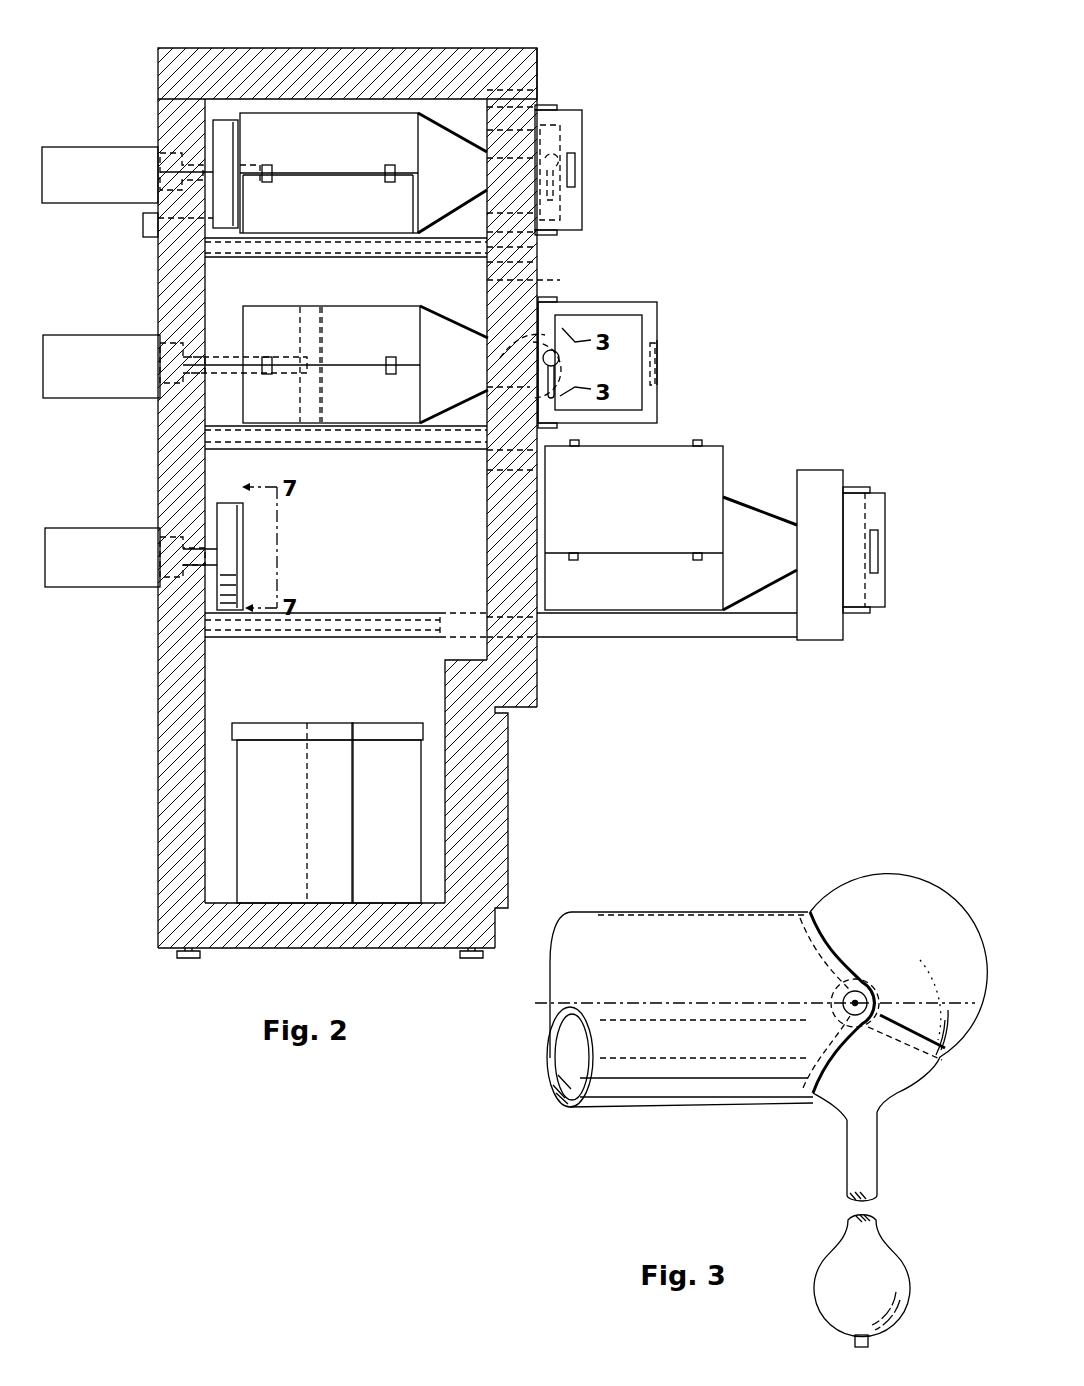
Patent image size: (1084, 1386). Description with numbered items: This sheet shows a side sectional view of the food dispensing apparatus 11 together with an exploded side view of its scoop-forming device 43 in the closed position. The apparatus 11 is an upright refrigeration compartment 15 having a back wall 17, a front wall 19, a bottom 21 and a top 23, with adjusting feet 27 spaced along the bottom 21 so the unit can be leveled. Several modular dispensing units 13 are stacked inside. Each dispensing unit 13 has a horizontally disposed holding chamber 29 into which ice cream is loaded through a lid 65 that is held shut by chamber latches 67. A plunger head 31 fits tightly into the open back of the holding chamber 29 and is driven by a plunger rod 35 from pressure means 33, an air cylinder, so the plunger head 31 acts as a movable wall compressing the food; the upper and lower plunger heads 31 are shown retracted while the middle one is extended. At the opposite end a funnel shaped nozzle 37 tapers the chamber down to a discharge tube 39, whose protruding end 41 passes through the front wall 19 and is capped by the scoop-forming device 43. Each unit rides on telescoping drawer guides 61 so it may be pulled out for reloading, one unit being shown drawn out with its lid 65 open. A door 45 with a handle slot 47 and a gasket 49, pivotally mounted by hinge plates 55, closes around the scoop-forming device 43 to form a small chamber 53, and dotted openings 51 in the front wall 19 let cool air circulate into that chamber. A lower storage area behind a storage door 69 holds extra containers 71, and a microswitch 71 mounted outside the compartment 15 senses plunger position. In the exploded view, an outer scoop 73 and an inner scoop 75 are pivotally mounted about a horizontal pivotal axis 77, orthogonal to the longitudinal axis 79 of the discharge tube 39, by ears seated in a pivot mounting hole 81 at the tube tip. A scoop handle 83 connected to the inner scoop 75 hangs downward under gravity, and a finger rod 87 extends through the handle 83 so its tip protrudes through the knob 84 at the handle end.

In FIG. 2, the food dispensing apparatus 11 is at (522, 0).
In FIG. 2, the dispensing unit 13 is at (518, 383).
In FIG. 2, the refrigeration compartment 15 is at (215, 268).
In FIG. 2, the back wall 17 is at (180, 712).
In FIG. 2, the front wall 19 is at (540, 280).
In FIG. 2, the bottom 21 is at (330, 930).
In FIG. 2, the top 23 is at (345, 63).
In FIG. 2, the adjusting feet 27 is at (190, 959).
In FIG. 2, the holding chamber 29 is at (316, 215).
In FIG. 2, the plunger head 31 is at (224, 128).
In FIG. 2, the pressure means 33 is at (100, 157).
In FIG. 2, the plunger rod 35 is at (207, 165).
In FIG. 2, the nozzle 37 is at (456, 150).
In FIG. 2, the discharge tube 39 is at (524, 355).
In FIG. 3, the discharge tube 39 is at (692, 1090).
In FIG. 2, the protruding end of discharge tube 41 is at (548, 347).
In FIG. 2, the scoop-forming device 43 is at (556, 163).
In FIG. 3, the scoop-forming device 43 is at (893, 1097).
In FIG. 2, the door 45 is at (576, 213).
In FIG. 2, the handle slot 47 is at (578, 172).
In FIG. 2, the gasket 49 is at (650, 406).
In FIG. 2, the openings 51 is at (508, 118).
In FIG. 2, the small chamber 53 is at (546, 140).
In FIG. 2, the hinge plates 55 is at (548, 105).
In FIG. 2, the drawer guides 61 is at (393, 243).
In FIG. 2, the lid 65 is at (316, 147).
In FIG. 2, the chamber latches 67 is at (272, 164).
In FIG. 2, the storage door 69 is at (512, 818).
In FIG. 2, the containers 71 is at (150, 222).
In FIG. 3, the outer scoop 73 is at (920, 936).
In FIG. 3, the inner scoop 75 is at (928, 1056).
In FIG. 3, the pivotal axis 77 is at (865, 992).
In FIG. 3, the longitudinal axis 79 is at (702, 1003).
In FIG. 3, the pivot mounting hole 81 is at (843, 999).
In FIG. 3, the scoop handle 83 is at (870, 1134).
In FIG. 3, the knob 84 is at (885, 1275).
In FIG. 3, the finger rod 87 is at (870, 1343).